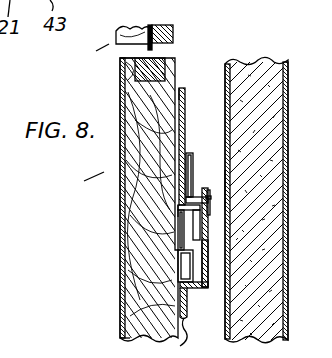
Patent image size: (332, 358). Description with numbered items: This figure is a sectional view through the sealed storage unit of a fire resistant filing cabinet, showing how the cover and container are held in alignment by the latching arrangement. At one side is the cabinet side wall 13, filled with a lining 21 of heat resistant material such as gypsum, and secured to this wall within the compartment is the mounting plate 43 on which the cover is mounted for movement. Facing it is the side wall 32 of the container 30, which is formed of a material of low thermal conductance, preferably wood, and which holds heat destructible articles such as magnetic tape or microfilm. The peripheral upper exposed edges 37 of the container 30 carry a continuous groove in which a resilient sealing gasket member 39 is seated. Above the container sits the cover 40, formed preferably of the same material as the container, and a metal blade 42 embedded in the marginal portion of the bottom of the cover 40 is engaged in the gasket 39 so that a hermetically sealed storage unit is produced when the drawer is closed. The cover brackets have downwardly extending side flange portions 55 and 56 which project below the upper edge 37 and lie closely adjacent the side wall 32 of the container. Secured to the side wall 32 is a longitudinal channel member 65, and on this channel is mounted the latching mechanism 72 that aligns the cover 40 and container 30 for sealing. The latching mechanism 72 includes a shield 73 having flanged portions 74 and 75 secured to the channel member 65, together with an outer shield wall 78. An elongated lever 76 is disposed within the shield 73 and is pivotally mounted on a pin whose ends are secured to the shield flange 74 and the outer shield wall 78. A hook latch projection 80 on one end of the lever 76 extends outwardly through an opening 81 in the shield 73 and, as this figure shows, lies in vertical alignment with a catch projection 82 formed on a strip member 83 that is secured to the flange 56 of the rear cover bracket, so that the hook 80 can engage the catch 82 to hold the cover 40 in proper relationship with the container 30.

The lining 21 is at (128, 319).
The side wall 32 is at (130, 297).
The mounting plate 43 is at (223, 71).
The sealing gasket member 39 is at (166, 67).
The metal blade 42 is at (152, 50).
The cover 40 is at (112, 42).
The peripheral upper exposed edges 37 is at (124, 54).
The container 30 is at (108, 170).
The strip member 83 is at (193, 153).
The side flange portion 56 is at (184, 100).
The catch projection 82 is at (192, 193).
The hook latch projection 80 is at (209, 189).
The shield 73 is at (212, 258).
The elongated lever 76 is at (229, 195).
The side wall 13 is at (211, 212).
The opening 81 is at (214, 224).
The flanged portion 74 is at (180, 216).
The outer shield wall 78 is at (210, 273).
The channel member 65 is at (178, 258).
The latching mechanism 72 is at (206, 291).
The flanged portion 75 is at (180, 338).
The side flange portion 55 is at (132, 348).